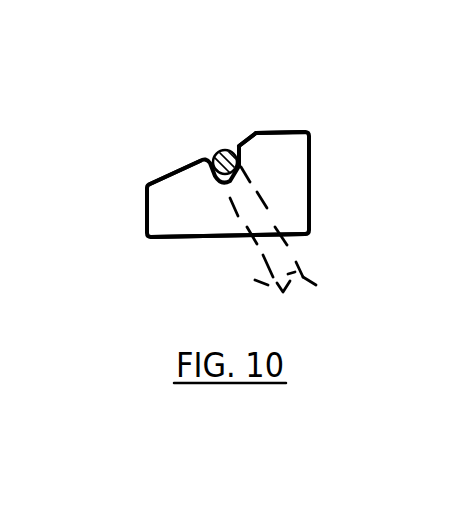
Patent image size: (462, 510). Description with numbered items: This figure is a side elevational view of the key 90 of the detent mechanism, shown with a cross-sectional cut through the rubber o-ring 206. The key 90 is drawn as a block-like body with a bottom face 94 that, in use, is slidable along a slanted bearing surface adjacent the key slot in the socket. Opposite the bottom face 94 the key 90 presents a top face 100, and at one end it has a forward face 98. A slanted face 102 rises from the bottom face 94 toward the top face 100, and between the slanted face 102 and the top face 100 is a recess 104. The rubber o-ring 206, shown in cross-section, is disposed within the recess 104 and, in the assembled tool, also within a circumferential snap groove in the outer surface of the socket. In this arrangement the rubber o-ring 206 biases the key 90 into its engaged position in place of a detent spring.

The key 90 is at (208, 104).
The bottom face 94 is at (163, 240).
The forward face 98 is at (313, 185).
The top face 100 is at (277, 131).
The slanted face 102 is at (181, 165).
The recess 104 is at (248, 132).
The rubber o-ring 206 is at (250, 193).